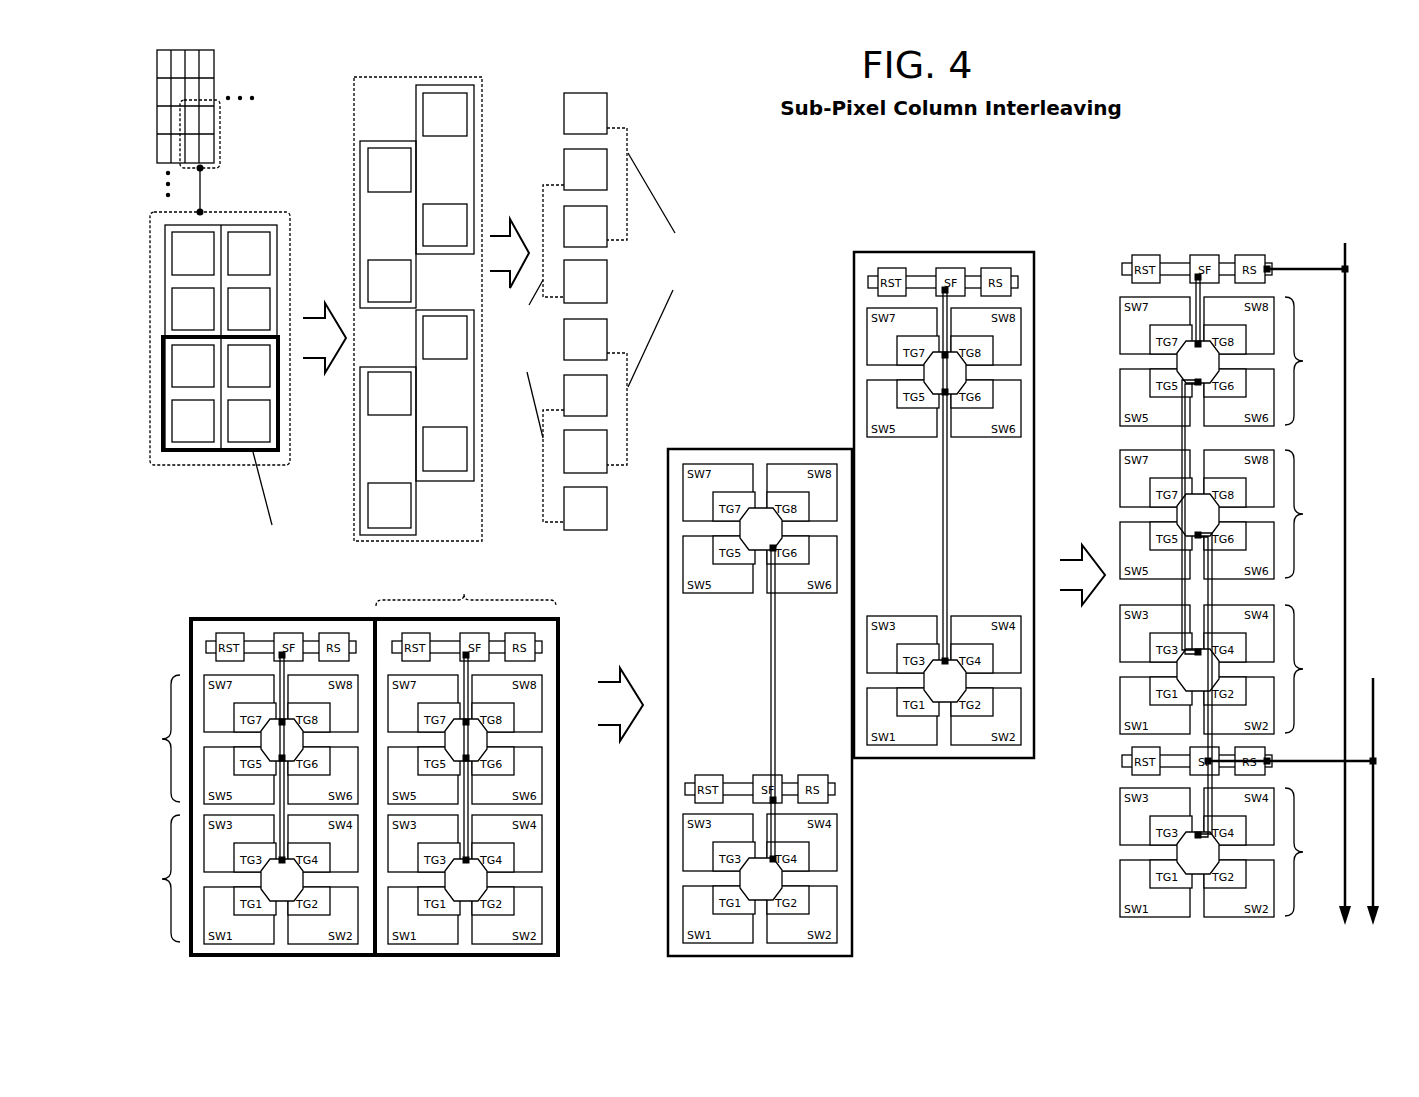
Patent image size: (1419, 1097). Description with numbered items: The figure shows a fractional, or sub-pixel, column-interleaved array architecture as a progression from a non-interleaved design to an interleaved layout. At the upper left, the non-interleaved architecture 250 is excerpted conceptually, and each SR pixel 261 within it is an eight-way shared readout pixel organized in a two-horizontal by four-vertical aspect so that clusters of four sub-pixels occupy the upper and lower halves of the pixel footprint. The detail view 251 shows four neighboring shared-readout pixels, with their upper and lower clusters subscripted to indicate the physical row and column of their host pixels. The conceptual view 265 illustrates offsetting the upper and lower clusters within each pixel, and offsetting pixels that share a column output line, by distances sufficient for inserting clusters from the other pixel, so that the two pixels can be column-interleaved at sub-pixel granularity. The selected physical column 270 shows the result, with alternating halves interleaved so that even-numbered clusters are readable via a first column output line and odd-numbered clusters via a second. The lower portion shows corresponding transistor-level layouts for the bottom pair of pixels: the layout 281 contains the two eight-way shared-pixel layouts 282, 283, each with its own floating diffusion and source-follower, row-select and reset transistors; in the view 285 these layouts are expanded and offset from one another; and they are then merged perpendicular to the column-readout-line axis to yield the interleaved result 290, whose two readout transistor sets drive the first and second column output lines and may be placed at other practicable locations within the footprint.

The non-interleaved architecture 250 is at (243, 133).
The SR pixel 261 is at (216, 60).
The detail view 251 is at (228, 212).
The conceptual view of offset clusters 265 is at (352, 256).
The selected physical column of sub-pixel interleaved logical columns 270 is at (578, 84).
The layout of shared-readout pixels 281 is at (352, 742).
The 8-way shared-pixel layout 282 is at (224, 624).
The 8-way shared-pixel layout 283 is at (372, 618).
The expanded and offset layout 285 is at (652, 640).
The sub-pixel-cluster interleaved result 290 is at (1176, 240).